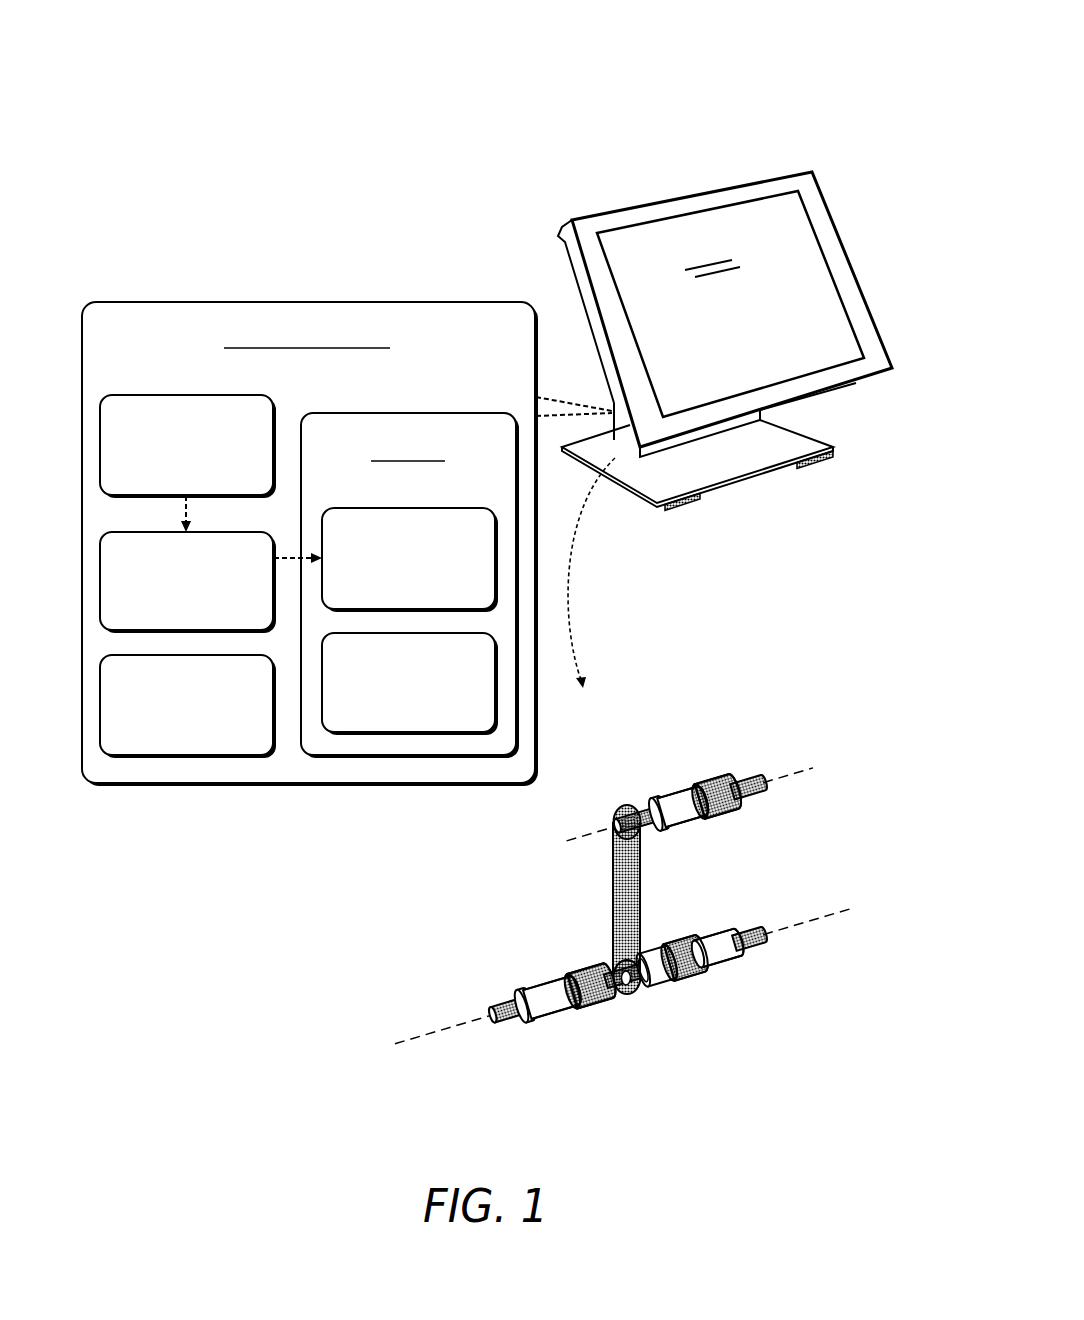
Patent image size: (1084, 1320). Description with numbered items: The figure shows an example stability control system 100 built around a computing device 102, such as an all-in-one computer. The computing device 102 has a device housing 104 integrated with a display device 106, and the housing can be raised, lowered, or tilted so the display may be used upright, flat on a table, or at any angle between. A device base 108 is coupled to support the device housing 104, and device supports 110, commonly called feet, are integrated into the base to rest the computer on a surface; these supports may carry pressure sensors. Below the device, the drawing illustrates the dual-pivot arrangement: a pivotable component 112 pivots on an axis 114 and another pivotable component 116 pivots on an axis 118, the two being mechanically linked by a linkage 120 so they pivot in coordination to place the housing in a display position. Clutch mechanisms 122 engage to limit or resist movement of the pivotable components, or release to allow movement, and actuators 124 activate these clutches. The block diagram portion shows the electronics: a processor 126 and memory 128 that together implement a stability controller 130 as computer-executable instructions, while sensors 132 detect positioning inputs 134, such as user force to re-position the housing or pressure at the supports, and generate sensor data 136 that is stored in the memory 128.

The stability control system 100 is at (759, 56).
The computing device 102 is at (290, 373).
The device housing 104 is at (762, 180).
The display device 106 is at (677, 233).
The device base 108 is at (740, 458).
The device supports 110 is at (693, 498).
The pivotable component 112 is at (747, 800).
The axis 114 is at (787, 779).
The pivotable component 116 is at (753, 947).
The axis 118 is at (826, 918).
The linkage 120 is at (613, 905).
The clutch mechanisms 122 is at (707, 780).
The actuators 124 is at (667, 797).
The processor 126 is at (169, 726).
The memory 128 is at (391, 487).
The stability controller 130 is at (391, 718).
The sensors 132 is at (169, 603).
The positioning inputs 134 is at (169, 478).
The sensor data 136 is at (391, 592).